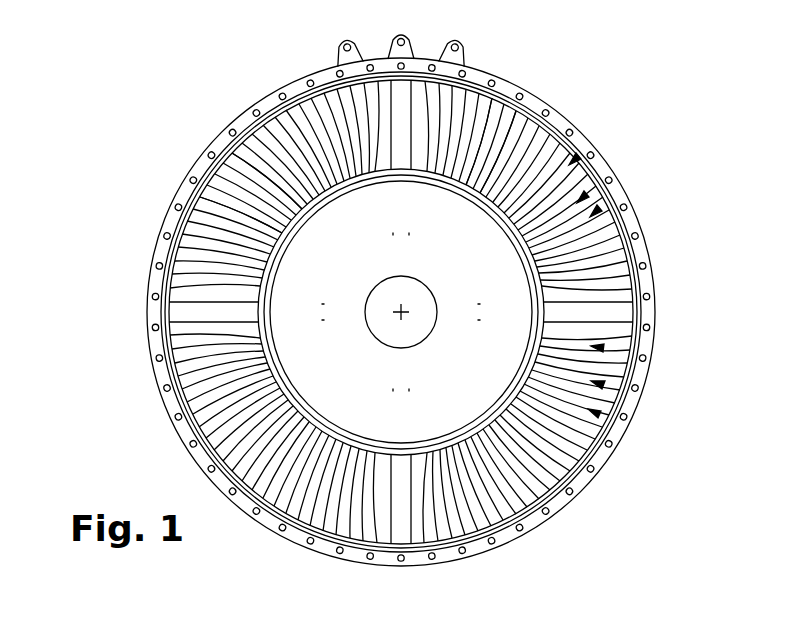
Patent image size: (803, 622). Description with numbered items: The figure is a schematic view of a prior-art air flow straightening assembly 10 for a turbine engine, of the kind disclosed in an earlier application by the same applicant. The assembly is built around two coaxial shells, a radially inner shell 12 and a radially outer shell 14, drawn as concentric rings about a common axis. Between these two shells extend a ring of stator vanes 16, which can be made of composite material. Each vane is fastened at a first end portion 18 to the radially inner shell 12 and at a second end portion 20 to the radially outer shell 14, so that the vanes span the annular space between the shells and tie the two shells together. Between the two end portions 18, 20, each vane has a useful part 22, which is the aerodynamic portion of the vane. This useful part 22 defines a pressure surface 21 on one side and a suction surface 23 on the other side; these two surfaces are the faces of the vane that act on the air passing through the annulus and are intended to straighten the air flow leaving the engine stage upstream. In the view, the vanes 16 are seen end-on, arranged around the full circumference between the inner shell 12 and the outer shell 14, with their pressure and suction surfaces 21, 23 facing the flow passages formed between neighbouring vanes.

The air flow straightening assembly 10 is at (656, 94).
The radially inner shell 12 is at (455, 190).
The radially outer shell 14 is at (648, 282).
The stator vanes 16 is at (600, 208).
The first end portion 18 is at (297, 303).
The second end portion 20 is at (172, 306).
The pressure surface 21 is at (480, 128).
The useful part 22 is at (212, 217).
The suction surface 23 is at (497, 135).